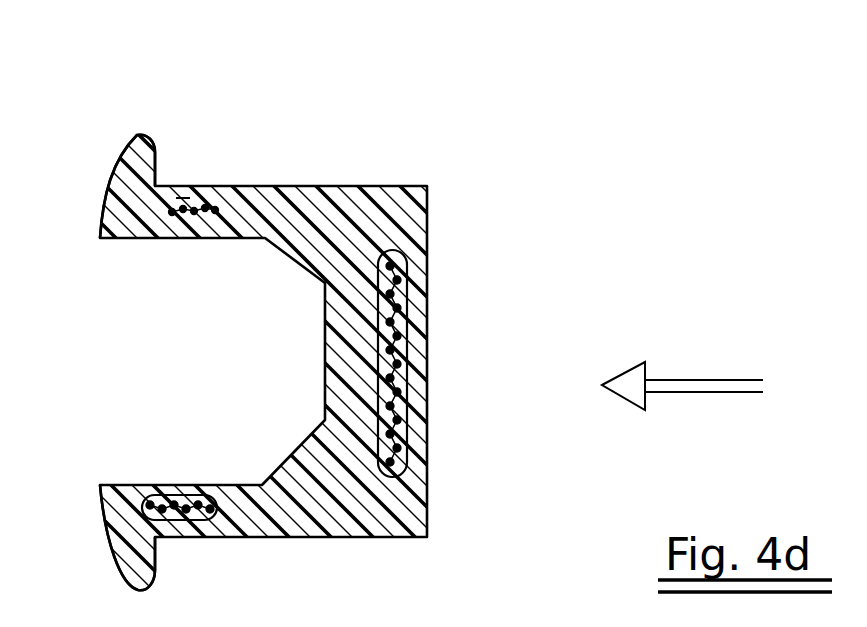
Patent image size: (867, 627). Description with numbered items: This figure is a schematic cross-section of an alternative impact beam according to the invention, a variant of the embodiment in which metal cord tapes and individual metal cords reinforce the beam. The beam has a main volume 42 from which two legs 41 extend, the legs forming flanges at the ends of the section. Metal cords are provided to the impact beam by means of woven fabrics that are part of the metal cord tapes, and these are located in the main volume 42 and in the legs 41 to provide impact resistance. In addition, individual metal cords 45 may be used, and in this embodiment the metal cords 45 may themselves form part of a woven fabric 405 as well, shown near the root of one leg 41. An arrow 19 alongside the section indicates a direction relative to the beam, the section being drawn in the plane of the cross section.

The legs 41 is at (122, 210).
The main volume 42 is at (393, 520).
The individual metal cords 45 is at (208, 193).
The woven fabric 405 is at (182, 198).
The flow direction arrow 19 is at (725, 389).